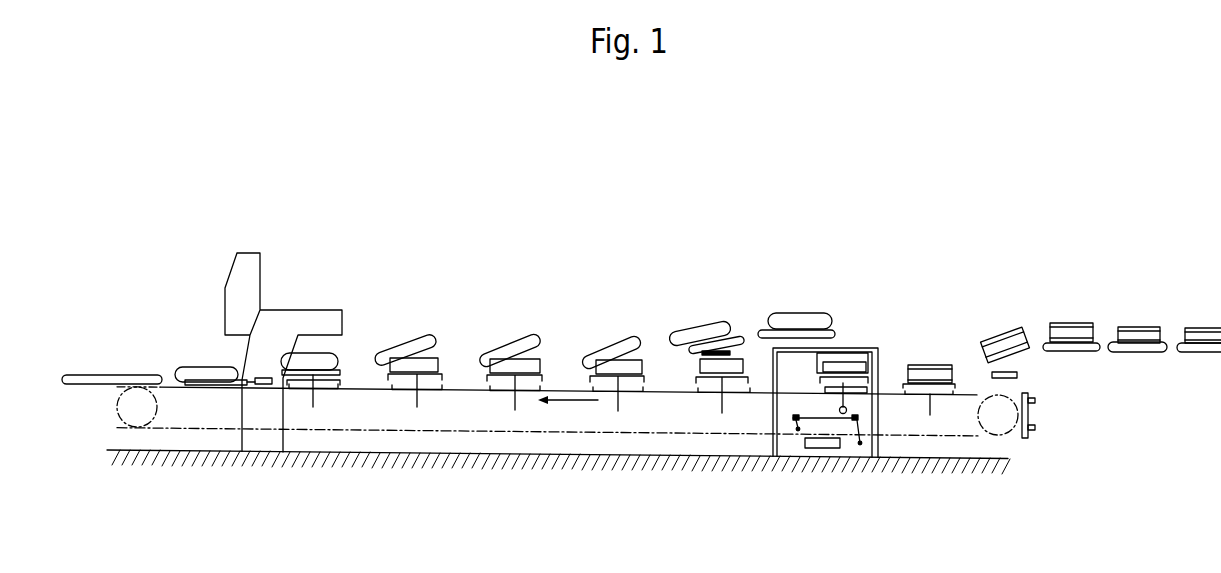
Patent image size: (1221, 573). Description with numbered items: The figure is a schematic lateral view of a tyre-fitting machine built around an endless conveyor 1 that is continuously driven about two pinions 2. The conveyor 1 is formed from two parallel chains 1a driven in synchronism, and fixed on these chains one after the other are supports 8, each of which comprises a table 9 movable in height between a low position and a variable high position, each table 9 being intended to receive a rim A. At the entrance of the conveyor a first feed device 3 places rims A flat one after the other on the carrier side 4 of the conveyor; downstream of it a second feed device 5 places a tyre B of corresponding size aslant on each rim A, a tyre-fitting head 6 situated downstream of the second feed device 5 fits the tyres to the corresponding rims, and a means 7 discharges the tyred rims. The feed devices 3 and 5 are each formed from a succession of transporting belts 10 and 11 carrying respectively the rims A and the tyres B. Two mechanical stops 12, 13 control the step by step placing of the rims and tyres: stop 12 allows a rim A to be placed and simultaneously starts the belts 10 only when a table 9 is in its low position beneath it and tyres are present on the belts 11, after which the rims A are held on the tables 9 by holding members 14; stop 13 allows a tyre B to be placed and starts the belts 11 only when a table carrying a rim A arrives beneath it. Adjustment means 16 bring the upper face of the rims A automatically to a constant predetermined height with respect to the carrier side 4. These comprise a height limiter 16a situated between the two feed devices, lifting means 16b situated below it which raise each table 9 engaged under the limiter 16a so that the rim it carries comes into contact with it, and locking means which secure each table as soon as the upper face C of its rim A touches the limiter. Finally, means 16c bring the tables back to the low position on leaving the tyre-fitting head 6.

The endless conveyor 1 is at (437, 436).
The parallel chains 1a is at (573, 434).
The pinions 2 is at (140, 415).
The first feed device 3 is at (1071, 349).
The carrier side 4 is at (563, 390).
The second feed device 5 is at (803, 300).
The tyre-fitting head 6 is at (304, 304).
The discharging means 7 is at (85, 368).
The supports 8 is at (490, 389).
The table 9 is at (698, 378).
The transporting belts 10 is at (1043, 346).
The transporting belts 11 is at (742, 336).
The mechanical stop 12 is at (980, 372).
The mechanical stop 13 is at (675, 358).
The holding members 14 is at (1037, 407).
The adjustment means 16 is at (853, 384).
The height limiter 16a is at (858, 355).
The lifting means 16b is at (792, 446).
The table return means 16c is at (203, 382).
The rim A is at (923, 372).
The tyre B is at (520, 343).
The upper face of the rim C is at (845, 358).